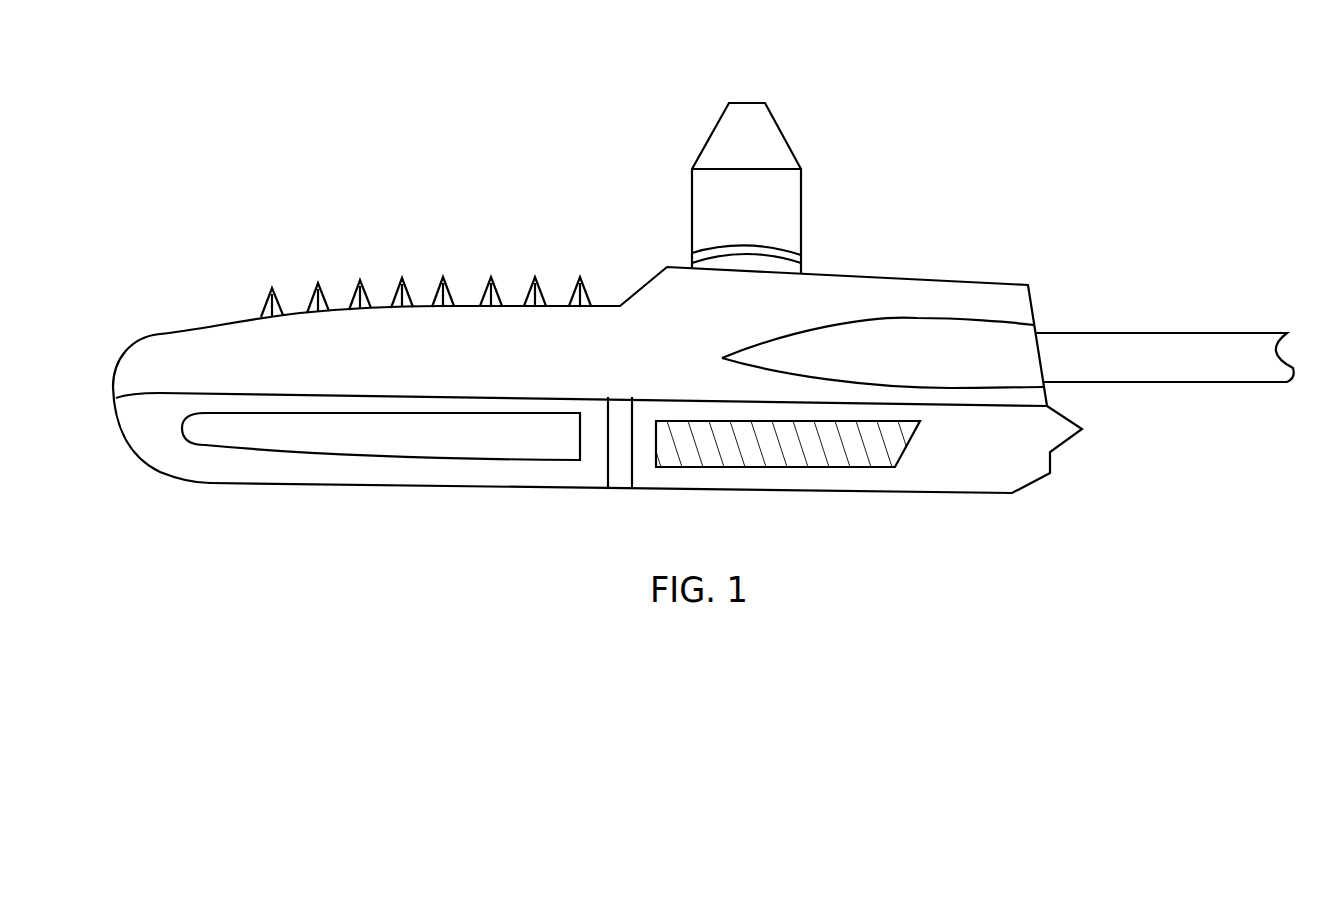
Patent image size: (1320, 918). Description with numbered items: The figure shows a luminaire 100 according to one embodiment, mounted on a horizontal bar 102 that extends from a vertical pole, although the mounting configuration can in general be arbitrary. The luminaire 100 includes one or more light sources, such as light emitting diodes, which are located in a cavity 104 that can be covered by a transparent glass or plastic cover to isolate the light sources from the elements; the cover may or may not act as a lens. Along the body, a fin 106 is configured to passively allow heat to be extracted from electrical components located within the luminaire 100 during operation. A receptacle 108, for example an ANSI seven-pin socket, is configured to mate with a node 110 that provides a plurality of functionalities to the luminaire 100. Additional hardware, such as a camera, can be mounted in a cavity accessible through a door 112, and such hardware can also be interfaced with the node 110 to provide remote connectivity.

The luminaire 100 is at (800, 90).
The horizontal bar 102 is at (1171, 347).
The cavity 104 is at (383, 447).
The fin 106 is at (447, 280).
The receptacle 108 is at (795, 270).
The node 110 is at (727, 128).
The door 112 is at (807, 458).